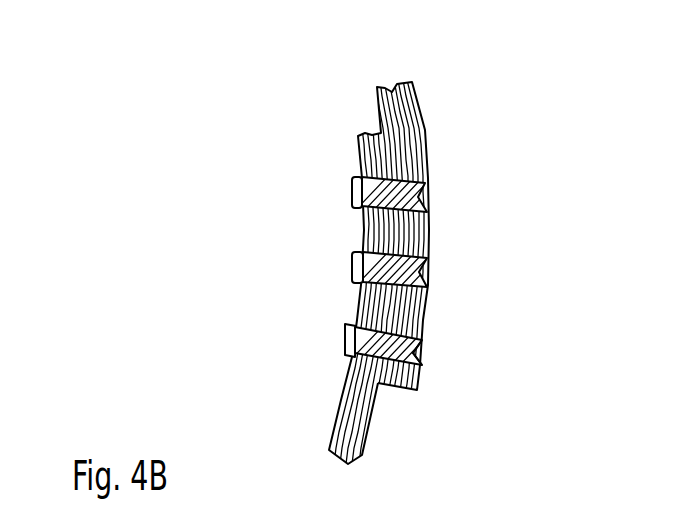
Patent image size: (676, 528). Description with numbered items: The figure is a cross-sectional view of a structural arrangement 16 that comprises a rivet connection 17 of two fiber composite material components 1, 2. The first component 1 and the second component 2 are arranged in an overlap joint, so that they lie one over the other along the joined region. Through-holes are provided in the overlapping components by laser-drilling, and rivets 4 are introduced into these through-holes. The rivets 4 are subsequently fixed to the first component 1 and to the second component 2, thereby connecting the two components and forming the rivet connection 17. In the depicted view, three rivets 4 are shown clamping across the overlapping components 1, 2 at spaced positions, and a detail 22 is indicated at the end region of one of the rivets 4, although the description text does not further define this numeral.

The first component 1 is at (393, 91).
The second component 2 is at (343, 440).
The rivet 4 is at (427, 192).
The structural arrangement 16 is at (273, 171).
The rivet connection 17 is at (294, 254).
The clamp tab 22 is at (422, 356).